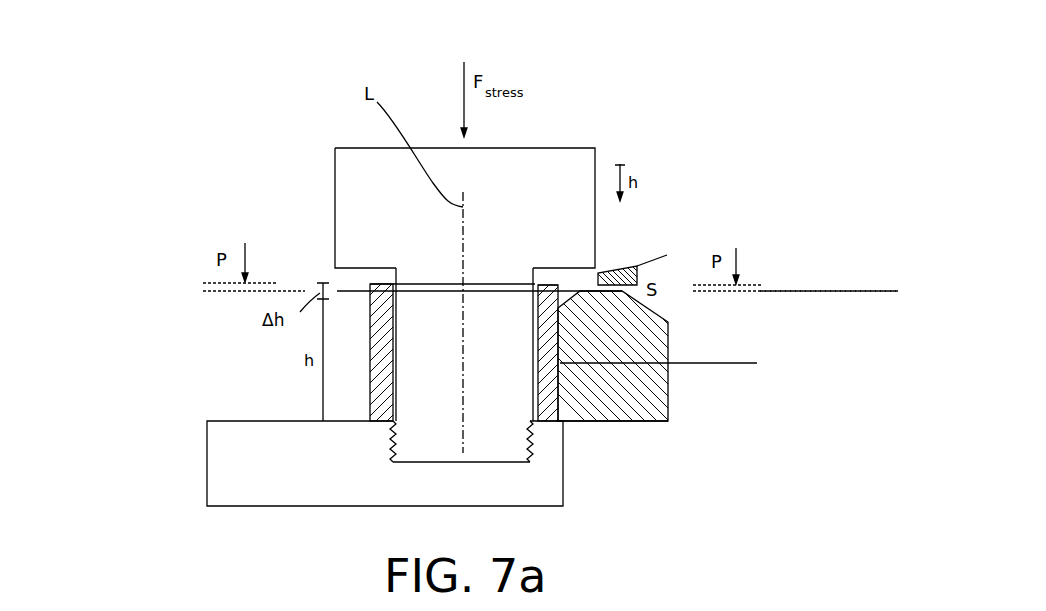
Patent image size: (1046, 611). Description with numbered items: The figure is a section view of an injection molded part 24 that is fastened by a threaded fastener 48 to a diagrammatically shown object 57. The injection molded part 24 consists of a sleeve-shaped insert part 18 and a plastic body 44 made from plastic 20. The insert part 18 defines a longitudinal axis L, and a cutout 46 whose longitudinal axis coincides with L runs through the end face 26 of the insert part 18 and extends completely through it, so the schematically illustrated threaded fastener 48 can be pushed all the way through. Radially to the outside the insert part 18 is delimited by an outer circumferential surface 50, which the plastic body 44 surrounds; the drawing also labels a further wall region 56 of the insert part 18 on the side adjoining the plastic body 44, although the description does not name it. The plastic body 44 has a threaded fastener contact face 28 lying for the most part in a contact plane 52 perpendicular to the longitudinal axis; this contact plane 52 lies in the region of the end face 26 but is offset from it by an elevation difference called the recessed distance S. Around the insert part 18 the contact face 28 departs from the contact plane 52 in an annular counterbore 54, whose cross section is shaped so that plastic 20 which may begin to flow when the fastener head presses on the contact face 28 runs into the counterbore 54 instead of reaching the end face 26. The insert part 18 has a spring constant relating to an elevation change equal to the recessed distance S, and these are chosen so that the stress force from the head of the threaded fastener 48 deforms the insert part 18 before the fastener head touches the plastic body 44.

The insert part 18 is at (545, 423).
The plastic 20 is at (635, 412).
The injection molded part 24 is at (690, 125).
The end face 26 is at (377, 278).
The threaded fastener contact face 28 is at (590, 271).
The plastic body 44 is at (626, 360).
The cutout 46 is at (493, 360).
The threaded fastener 48 is at (353, 172).
The outer circumferential surface 50 is at (370, 392).
The contact plane 52 is at (818, 291).
The annular counterbore 54 is at (570, 286).
The right wall 56 is at (555, 262).
The object 57 is at (385, 463).